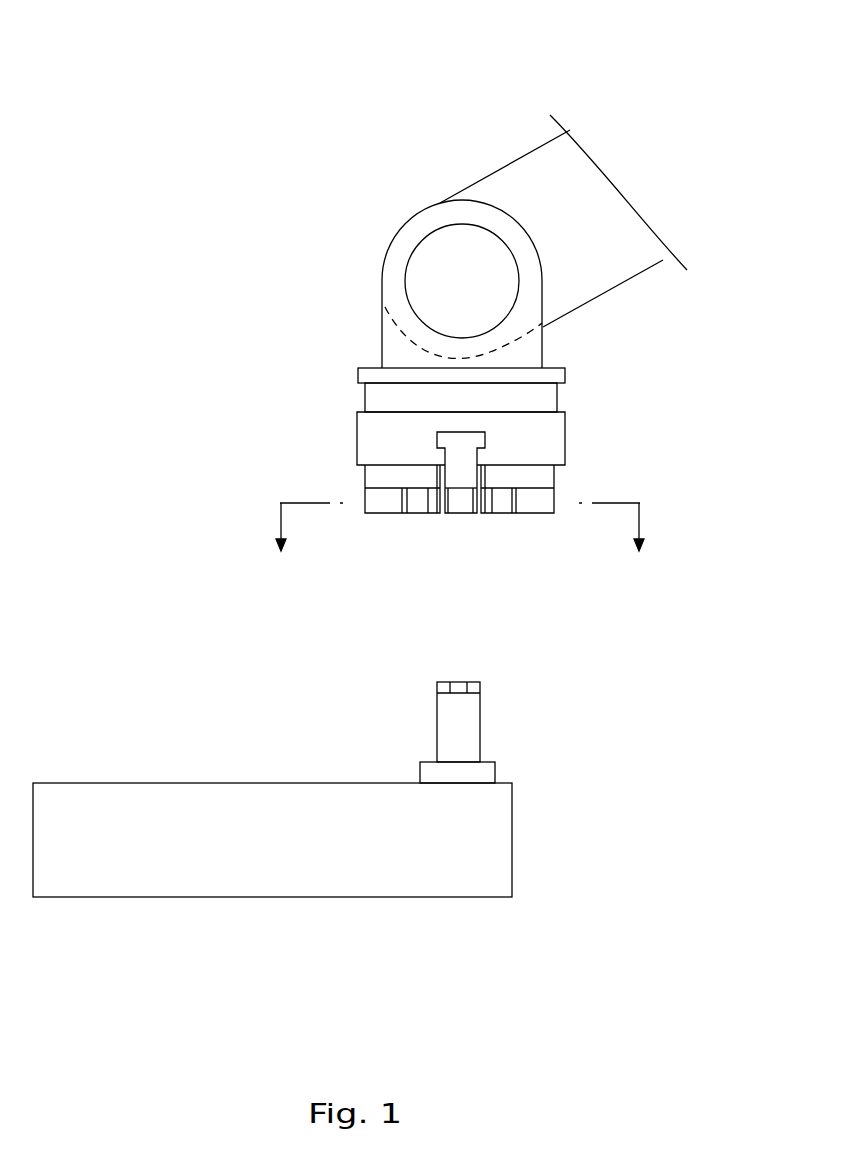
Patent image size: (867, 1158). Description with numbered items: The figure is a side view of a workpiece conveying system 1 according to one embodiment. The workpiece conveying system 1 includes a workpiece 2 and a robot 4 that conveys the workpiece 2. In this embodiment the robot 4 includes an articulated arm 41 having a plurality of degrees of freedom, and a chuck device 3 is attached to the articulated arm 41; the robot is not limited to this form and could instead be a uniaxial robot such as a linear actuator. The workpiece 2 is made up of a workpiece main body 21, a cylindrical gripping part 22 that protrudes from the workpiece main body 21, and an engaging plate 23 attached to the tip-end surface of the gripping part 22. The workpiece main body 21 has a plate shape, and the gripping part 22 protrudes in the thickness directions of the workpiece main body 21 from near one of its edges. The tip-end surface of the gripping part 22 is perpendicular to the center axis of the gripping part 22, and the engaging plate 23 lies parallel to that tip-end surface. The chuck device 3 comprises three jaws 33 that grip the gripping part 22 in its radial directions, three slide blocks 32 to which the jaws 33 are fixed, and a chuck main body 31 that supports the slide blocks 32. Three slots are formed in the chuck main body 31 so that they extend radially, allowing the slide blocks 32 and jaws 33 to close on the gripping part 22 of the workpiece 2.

The workpiece conveying system 1 is at (190, 240).
The workpiece 2 is at (284, 900).
The workpiece main body 21 is at (177, 857).
The gripping part 22 is at (462, 734).
The engaging plate 23 is at (460, 681).
The chuck device 3 is at (357, 432).
The chuck main body 31 is at (553, 438).
The slide blocks 32 is at (378, 478).
The jaws 33 is at (385, 510).
The robot 4 is at (547, 190).
The articulated arm 41 is at (563, 221).